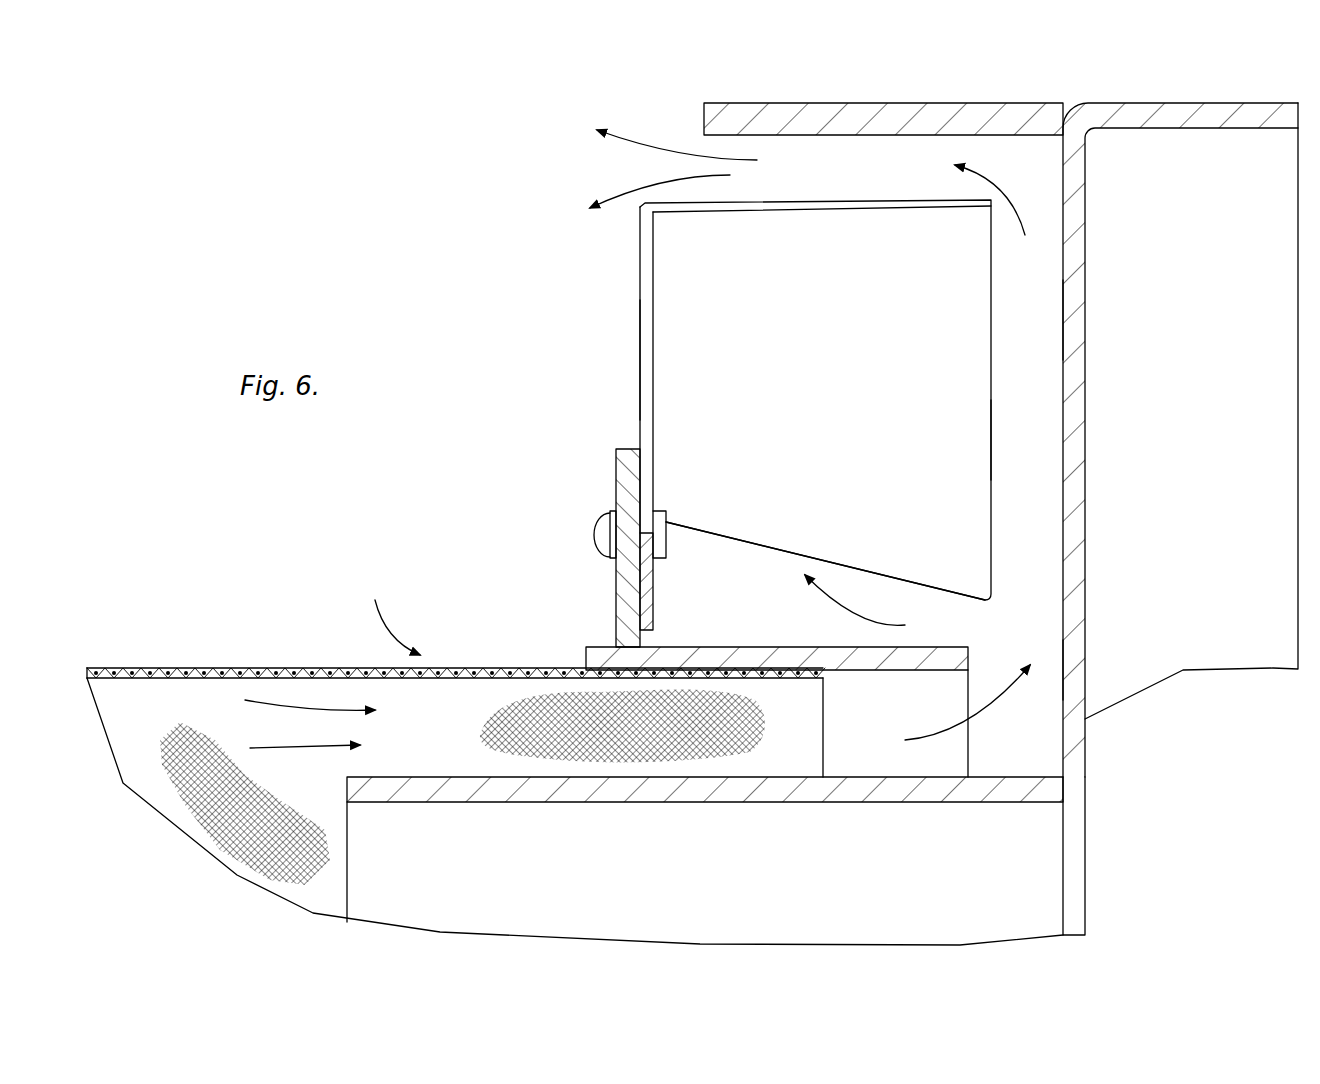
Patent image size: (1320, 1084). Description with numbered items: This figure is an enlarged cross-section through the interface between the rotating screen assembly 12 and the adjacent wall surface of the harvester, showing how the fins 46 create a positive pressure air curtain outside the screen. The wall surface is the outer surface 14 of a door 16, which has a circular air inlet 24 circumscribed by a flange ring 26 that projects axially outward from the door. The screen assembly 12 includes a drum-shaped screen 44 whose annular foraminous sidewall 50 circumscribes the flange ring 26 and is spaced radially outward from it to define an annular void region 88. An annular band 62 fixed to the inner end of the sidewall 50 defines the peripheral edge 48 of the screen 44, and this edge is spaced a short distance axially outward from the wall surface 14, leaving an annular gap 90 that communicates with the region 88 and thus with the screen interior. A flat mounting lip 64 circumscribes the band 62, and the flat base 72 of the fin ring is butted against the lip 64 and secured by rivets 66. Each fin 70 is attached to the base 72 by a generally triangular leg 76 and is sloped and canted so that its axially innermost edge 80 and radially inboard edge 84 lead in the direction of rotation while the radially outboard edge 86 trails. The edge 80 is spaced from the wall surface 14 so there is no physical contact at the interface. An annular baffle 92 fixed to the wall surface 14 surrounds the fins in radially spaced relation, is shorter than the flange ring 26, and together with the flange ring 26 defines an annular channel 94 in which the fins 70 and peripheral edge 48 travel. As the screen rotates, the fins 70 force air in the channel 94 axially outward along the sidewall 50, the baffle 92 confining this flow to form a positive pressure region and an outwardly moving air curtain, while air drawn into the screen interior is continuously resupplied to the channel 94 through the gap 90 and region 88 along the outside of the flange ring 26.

The screen assembly 12 is at (440, 570).
The outer surface 14 is at (1062, 452).
The door 16 is at (1215, 103).
The air inlet 24 is at (1075, 860).
The flange ring 26 is at (615, 797).
The screen 44 is at (155, 665).
The fins 46 is at (632, 265).
The peripheral edge 48 is at (968, 655).
The sidewall 50 is at (298, 668).
The band 62 is at (705, 655).
The mounting lip 64 is at (628, 588).
The rivets 66 is at (604, 530).
The fin 70 is at (820, 195).
The base 72 is at (648, 590).
The leg 76 is at (645, 355).
The axially innermost edge 80 is at (991, 437).
The radially inboard edge 84 is at (755, 545).
The radially outboard edge 86 is at (745, 205).
The annular void region 88 is at (790, 745).
The annular gap 90 is at (1050, 668).
The baffle 92 is at (848, 112).
The channel 94 is at (1042, 330).